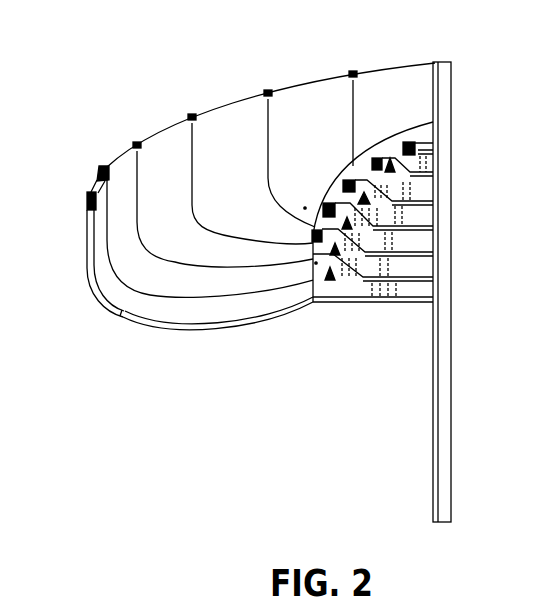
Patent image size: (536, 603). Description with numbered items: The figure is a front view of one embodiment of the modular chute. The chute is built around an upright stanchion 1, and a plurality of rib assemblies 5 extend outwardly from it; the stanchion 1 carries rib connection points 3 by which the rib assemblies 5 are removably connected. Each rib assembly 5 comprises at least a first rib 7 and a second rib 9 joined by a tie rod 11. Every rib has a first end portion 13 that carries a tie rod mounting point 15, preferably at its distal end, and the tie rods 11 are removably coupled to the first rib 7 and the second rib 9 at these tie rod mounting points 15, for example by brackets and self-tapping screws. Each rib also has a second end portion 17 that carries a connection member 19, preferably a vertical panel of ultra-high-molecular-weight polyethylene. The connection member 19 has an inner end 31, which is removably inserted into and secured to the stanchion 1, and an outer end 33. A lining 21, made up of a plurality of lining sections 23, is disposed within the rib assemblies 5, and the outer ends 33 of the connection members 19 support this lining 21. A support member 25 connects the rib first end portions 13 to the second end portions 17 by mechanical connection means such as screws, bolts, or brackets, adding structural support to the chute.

The stanchion 1 is at (452, 393).
The rib connection points 3 is at (432, 304).
The rib assemblies 5 is at (345, 304).
The first rib 7 is at (90, 196).
The second rib 9 is at (102, 166).
The tie rod 11 is at (93, 185).
The first end portion 13 is at (90, 288).
The tie rod mounting points 15 is at (88, 212).
The second end portion 17 is at (218, 335).
The connection member 19 is at (363, 304).
The lining 21 is at (398, 78).
The lining sections 23 is at (363, 90).
The support member 25 is at (126, 318).
The inner end 31 is at (395, 304).
The outer end 33 is at (315, 304).